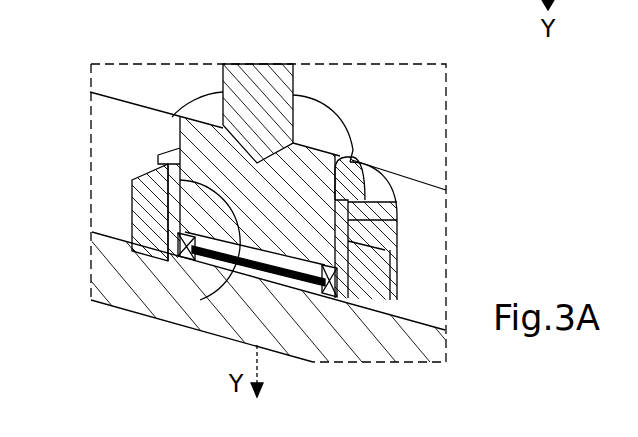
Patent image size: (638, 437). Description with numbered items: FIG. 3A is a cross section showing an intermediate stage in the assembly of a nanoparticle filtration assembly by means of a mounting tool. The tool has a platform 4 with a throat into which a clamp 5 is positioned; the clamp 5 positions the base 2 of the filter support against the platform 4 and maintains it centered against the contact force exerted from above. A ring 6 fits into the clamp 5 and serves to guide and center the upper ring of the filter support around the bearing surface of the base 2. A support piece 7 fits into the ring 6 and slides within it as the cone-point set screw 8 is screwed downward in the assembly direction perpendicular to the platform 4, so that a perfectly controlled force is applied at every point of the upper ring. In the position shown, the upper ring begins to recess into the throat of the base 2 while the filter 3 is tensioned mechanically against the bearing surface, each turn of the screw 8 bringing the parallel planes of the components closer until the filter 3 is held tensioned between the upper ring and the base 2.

The base 2 is at (332, 298).
The filter 3 is at (130, 177).
The platform 4 is at (215, 262).
The clamp 5 is at (390, 267).
The ring 6 is at (352, 157).
The support piece 7 is at (317, 113).
The cone-point set screw 8 is at (262, 80).